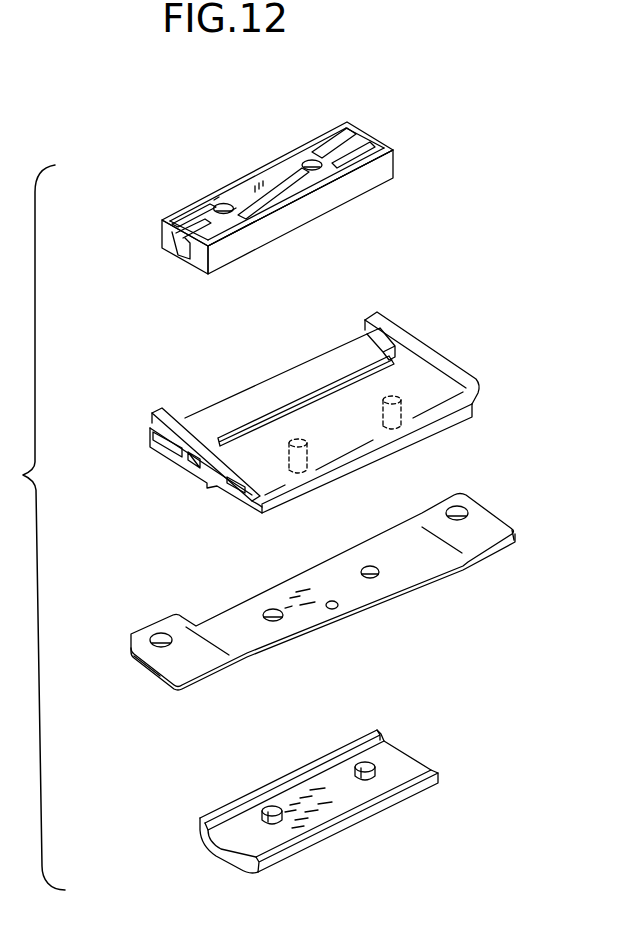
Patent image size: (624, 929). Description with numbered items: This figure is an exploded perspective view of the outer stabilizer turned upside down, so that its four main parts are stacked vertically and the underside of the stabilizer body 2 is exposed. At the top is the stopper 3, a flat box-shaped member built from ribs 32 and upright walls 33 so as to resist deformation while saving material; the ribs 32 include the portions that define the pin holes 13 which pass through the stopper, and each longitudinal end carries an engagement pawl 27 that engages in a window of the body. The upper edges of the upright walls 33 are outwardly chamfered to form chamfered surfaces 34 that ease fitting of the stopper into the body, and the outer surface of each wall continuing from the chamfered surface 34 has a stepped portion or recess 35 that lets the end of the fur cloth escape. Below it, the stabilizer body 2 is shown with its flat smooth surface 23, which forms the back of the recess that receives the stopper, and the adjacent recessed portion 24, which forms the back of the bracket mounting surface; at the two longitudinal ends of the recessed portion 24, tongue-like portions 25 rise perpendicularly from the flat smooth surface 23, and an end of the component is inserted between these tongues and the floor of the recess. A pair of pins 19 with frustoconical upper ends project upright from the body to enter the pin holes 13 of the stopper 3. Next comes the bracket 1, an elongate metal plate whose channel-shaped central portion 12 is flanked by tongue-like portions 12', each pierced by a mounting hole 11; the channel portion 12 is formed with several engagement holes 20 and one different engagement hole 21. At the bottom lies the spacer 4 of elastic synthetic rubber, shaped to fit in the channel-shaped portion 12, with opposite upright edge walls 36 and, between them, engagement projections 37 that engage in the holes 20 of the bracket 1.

The bracket 1 is at (190, 602).
The stabilizer body 2 is at (132, 424).
The stopper 3 is at (152, 233).
The spacer 4 is at (218, 796).
The mounting hole 11 is at (463, 507).
The channel-shaped central portion 12 is at (323, 596).
The tongue-like portions 12' is at (328, 607).
The pin holes 13 is at (222, 202).
The pins 19 is at (398, 398).
The engagement holes 20 is at (273, 609).
The different engagement hole 21 is at (334, 610).
The flat smooth surface 23 is at (443, 368).
The recessed portion 24 is at (278, 380).
The tongue-like portions 25 is at (165, 412).
The engagement pawl 27 is at (188, 250).
The ribs 32 is at (347, 145).
The upright walls 33 is at (266, 182).
The chamfered surfaces 34 is at (353, 178).
The stepped portion or recess 35 is at (270, 233).
The upright edge walls 36 is at (318, 757).
The engagement projections 37 is at (270, 806).